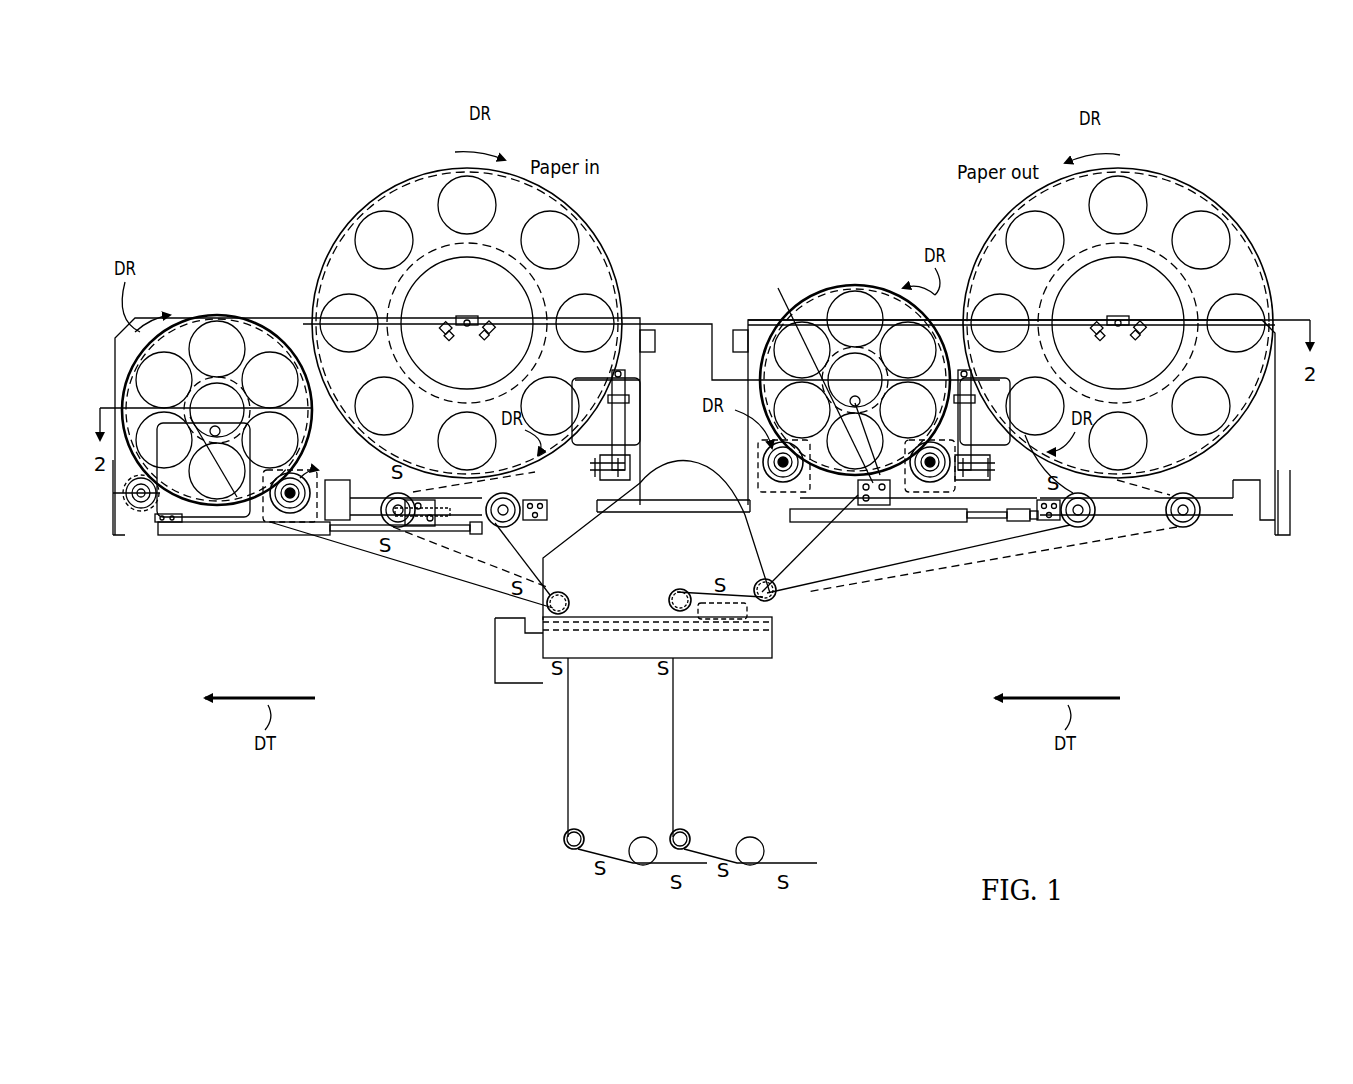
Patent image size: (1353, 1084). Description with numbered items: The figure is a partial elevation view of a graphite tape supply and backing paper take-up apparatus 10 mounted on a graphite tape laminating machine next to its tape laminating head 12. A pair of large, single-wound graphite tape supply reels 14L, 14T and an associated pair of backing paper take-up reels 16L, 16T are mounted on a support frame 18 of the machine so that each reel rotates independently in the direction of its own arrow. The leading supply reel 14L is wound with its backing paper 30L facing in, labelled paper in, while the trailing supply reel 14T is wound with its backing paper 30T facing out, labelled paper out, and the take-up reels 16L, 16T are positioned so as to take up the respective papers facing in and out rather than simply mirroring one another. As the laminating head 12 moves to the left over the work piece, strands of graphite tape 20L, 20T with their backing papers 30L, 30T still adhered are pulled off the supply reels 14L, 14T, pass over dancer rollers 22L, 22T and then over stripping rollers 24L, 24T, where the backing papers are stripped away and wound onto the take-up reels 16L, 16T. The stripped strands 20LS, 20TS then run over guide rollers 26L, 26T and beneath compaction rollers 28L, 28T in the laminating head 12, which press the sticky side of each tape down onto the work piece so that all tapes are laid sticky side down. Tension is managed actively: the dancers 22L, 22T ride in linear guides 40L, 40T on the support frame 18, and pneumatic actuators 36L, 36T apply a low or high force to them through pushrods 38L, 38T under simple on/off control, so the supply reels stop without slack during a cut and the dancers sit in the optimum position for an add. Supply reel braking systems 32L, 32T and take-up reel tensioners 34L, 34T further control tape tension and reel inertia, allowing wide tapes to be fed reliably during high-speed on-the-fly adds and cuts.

The graphite tape supply and backing paper take-up apparatus 10 is at (818, 150).
The tape laminating head 12 is at (620, 660).
The leading graphite tape supply reel 14L is at (420, 170).
The trailing graphite tape supply reel 14T is at (1160, 172).
The backing paper take-up reel 16L is at (215, 312).
The backing paper take-up reel 16T is at (862, 285).
The support frame 18 is at (130, 515).
The graphite tape strand 20L is at (515, 548).
The graphite tape strand 20T is at (978, 548).
The stripped graphite tape strand 20LS is at (568, 742).
The stripped graphite tape strand 20TS is at (673, 728).
The dancer roller 22L is at (520, 500).
The dancer roller 22T is at (1085, 530).
The stripping roller 24L is at (570, 595).
The stripping roller 24T is at (752, 582).
The guide roller 26L is at (582, 828).
The guide roller 26T is at (672, 592).
The compaction roller 28L is at (643, 836).
The compaction roller 28T is at (756, 836).
The backing paper 30L is at (400, 565).
The backing paper 30T is at (820, 540).
The supply reel braking system 32L is at (640, 380).
The supply reel braking system 32T is at (876, 391).
The backing paper take-up reel tensioner 34L is at (305, 475).
The backing paper take-up reel tensioner 34T is at (768, 458).
The pneumatic actuator 36L is at (200, 532).
The pneumatic actuator 36T is at (893, 522).
The pushrod 38L is at (350, 538).
The pushrod 38T is at (1003, 518).
The linear guide 40L is at (395, 500).
The linear guide 40T is at (1215, 520).